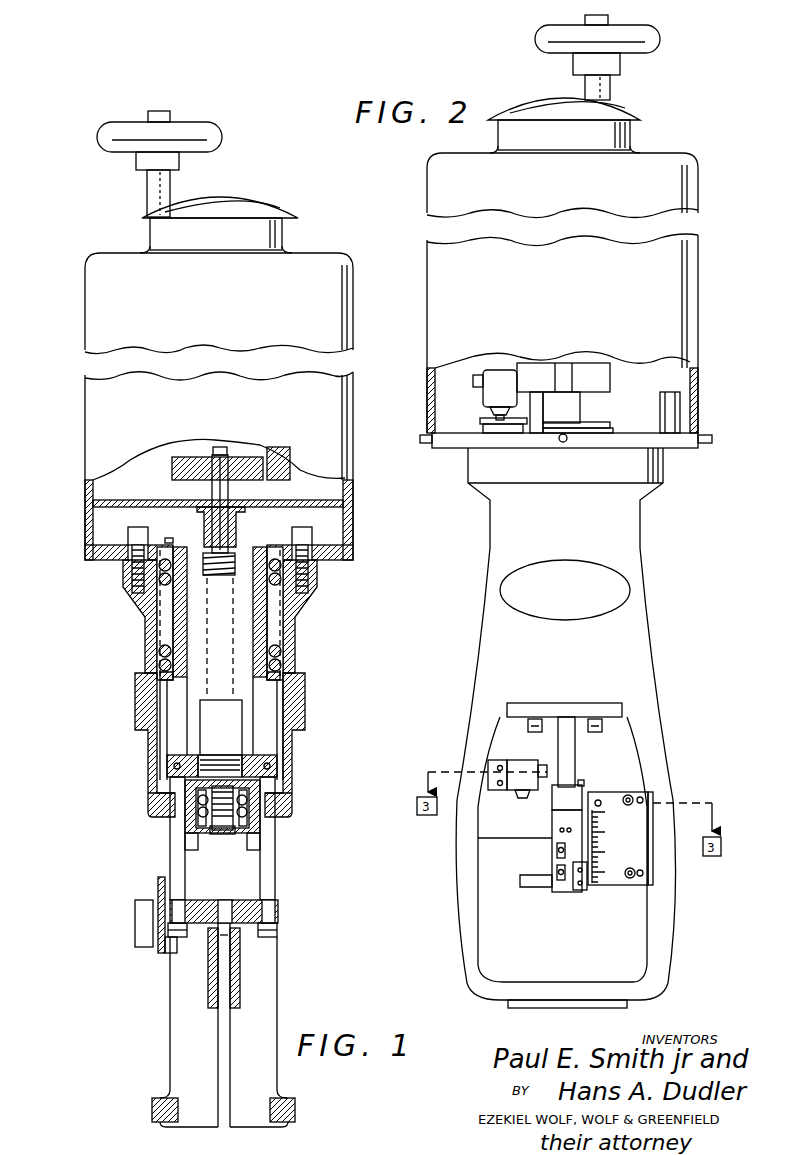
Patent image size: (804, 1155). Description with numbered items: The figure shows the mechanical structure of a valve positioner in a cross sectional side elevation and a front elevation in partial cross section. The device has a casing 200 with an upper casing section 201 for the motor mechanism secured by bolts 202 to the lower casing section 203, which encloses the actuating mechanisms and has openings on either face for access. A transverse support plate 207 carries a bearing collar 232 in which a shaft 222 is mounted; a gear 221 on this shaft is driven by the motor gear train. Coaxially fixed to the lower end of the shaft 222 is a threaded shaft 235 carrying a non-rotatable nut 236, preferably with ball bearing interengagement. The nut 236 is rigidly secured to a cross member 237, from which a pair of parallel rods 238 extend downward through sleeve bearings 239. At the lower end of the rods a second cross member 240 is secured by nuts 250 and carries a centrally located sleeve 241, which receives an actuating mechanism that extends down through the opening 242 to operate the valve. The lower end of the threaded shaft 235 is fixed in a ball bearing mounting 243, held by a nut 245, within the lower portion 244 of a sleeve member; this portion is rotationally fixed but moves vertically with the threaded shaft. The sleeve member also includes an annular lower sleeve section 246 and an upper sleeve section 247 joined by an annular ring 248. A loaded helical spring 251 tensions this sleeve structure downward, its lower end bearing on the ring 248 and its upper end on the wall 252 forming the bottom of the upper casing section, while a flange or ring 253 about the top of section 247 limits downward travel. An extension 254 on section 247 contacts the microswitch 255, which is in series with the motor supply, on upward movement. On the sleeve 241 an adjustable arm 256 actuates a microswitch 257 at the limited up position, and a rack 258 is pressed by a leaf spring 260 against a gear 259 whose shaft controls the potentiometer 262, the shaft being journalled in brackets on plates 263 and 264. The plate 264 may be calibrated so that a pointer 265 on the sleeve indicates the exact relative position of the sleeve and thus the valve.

In FIG. 2, the casing 200 is at (498, 533).
In FIG. 1, the upper casing section 201 is at (85, 393).
In FIG. 2, the upper casing section 201 is at (427, 318).
In FIG. 1, the bolts 202 is at (138, 527).
In FIG. 1, the lower casing section 203 is at (135, 726).
In FIG. 2, the lower casing section 203 is at (486, 652).
In FIG. 1, the support plate 207 is at (160, 505).
In FIG. 1, the gear 221 is at (175, 468).
In FIG. 2, the gear 221 is at (612, 363).
In FIG. 1, the shaft 222 is at (226, 492).
In FIG. 2, the shaft 222 is at (573, 380).
In FIG. 1, the bearing collar 232 is at (203, 524).
In FIG. 2, the bearing collar 232 is at (572, 412).
In FIG. 1, the threaded shaft 235 is at (231, 610).
In FIG. 1, the non-rotatable nut 236 is at (230, 727).
In FIG. 1, the cross member 237 is at (196, 753).
In FIG. 1, the parallel rods 238 is at (178, 858).
In FIG. 1, the sleeve bearings 239 is at (150, 802).
In FIG. 1, the second cross member 240 is at (200, 903).
In FIG. 1, the sleeve 241 is at (208, 988).
In FIG. 2, the sleeve 241 is at (558, 830).
In FIG. 1, the opening 242 is at (190, 1112).
In FIG. 1, the ball bearing mounting 243 is at (238, 832).
In FIG. 1, the lower portion of sleeve member 244 is at (248, 812).
In FIG. 1, the nut 245 is at (213, 835).
In FIG. 1, the annular lower sleeve section 246 is at (164, 712).
In FIG. 1, the upper sleeve section 247 is at (178, 618).
In FIG. 2, the upper sleeve section 247 is at (600, 423).
In FIG. 1, the annular ring 248 is at (175, 680).
In FIG. 1, the nuts 250 is at (182, 940).
In FIG. 1, the helical spring 251 is at (162, 578).
In FIG. 1, the wall 252 is at (95, 548).
In FIG. 1, the flange or ring 253 is at (170, 538).
In FIG. 2, the flange or ring 253 is at (612, 430).
In FIG. 2, the extension 254 is at (505, 420).
In FIG. 2, the microswitch 255 is at (483, 397).
In FIG. 2, the adjustable arm 256 is at (540, 880).
In FIG. 2, the microswitch 257 is at (520, 790).
In FIG. 2, the rack 258 is at (585, 790).
In FIG. 2, the gear 259 is at (602, 836).
In FIG. 2, the leaf spring 260 is at (580, 785).
In FIG. 1, the potentiometer 262 is at (135, 912).
In FIG. 1, the plate 263 is at (158, 882).
In FIG. 2, the plate 264 is at (608, 800).
In FIG. 2, the pointer 265 is at (586, 884).